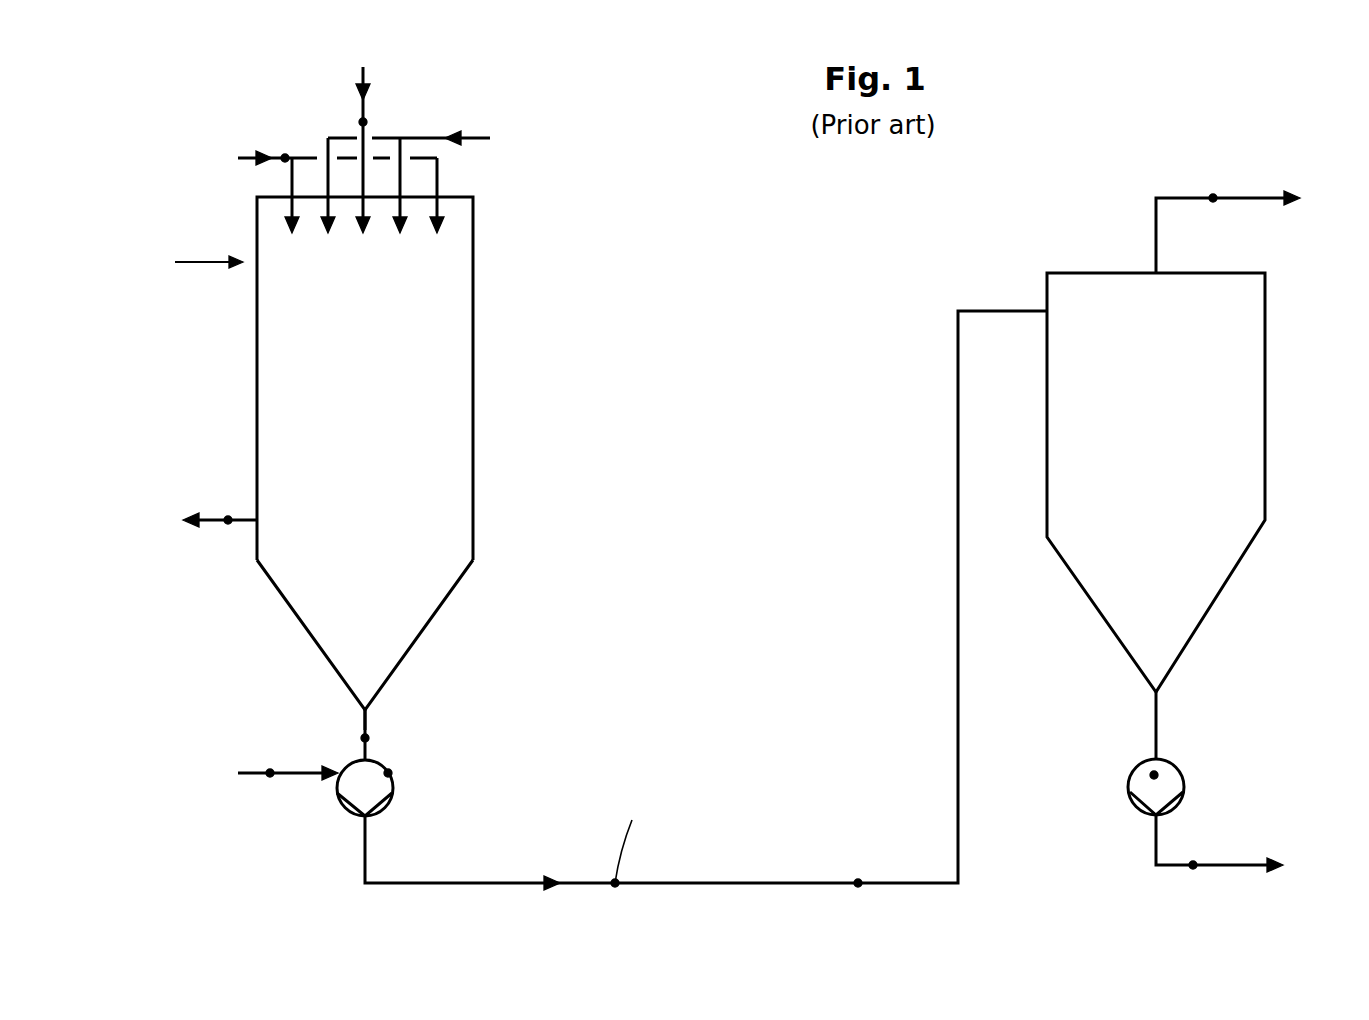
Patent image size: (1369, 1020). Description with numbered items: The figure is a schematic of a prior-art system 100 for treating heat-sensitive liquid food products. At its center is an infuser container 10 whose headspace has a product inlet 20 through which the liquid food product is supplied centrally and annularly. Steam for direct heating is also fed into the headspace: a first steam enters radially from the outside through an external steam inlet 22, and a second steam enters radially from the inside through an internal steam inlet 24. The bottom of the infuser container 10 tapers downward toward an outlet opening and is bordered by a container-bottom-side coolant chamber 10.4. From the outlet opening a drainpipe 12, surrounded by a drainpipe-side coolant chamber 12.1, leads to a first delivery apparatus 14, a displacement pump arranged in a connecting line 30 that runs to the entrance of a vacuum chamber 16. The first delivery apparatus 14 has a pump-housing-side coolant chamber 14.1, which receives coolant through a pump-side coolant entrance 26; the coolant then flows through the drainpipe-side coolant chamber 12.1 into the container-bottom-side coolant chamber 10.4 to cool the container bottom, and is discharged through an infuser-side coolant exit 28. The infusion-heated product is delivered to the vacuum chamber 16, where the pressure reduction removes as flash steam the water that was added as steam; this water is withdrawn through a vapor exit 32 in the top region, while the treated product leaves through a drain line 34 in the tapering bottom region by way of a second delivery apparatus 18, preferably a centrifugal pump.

The system 100 is at (712, 427).
The infuser container 10 is at (365, 378).
The container-bottom-side coolant chamber 10.4 is at (288, 627).
The drainpipe 12 is at (365, 738).
The drainpipe-side coolant chamber 12.1 is at (260, 699).
The first delivery apparatus 14 is at (400, 807).
The pump-housing-side coolant chamber 14.1 is at (388, 773).
The vacuum chamber 16 is at (1156, 482).
The second delivery apparatus 18 is at (1154, 775).
The product inlet 20 is at (445, 138).
The external steam inlet 22 is at (285, 158).
The internal steam inlet 24 is at (390, 128).
The pump-side coolant entrance 26 is at (270, 773).
The infuser-side coolant exit 28 is at (189, 469).
The connecting line 30 is at (858, 883).
The vapor exit 32 is at (1254, 197).
The drain line 34 is at (1193, 865).